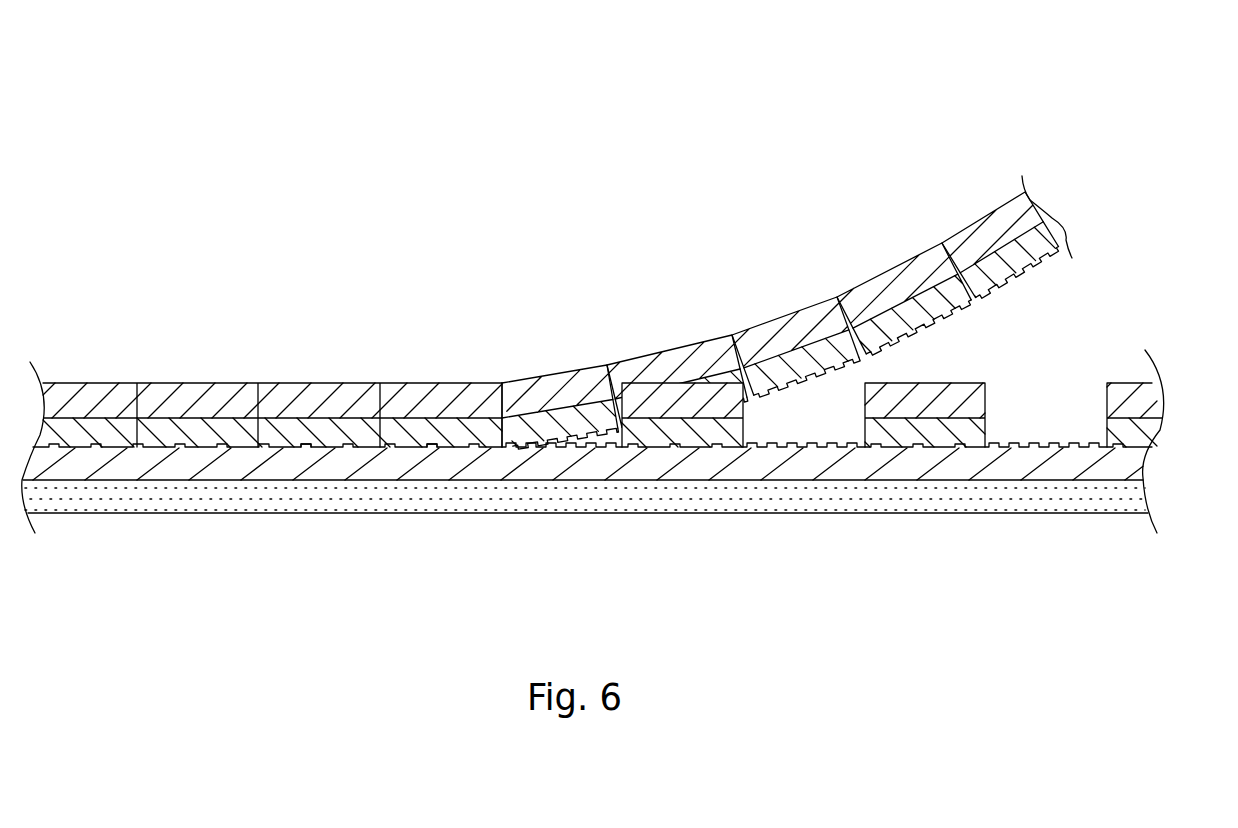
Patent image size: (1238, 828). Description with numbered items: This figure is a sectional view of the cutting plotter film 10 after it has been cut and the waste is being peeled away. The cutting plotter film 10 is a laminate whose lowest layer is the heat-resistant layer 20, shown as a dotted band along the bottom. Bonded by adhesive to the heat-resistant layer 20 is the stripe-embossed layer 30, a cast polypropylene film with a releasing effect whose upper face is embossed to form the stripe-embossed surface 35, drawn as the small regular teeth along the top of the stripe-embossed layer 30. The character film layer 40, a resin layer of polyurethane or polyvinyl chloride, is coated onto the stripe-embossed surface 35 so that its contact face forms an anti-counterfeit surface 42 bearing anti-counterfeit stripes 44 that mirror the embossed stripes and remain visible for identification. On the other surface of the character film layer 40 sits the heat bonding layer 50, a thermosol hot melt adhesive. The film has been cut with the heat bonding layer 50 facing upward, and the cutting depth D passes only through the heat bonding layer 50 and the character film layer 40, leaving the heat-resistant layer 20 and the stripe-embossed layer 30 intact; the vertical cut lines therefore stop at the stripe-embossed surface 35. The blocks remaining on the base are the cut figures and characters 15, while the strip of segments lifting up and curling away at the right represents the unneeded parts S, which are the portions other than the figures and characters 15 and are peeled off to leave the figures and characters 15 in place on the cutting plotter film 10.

The cutting plotter film 10 is at (131, 308).
The figures and characters 15 is at (925, 383).
The heat-resistant layer 20 is at (116, 500).
The stripe-embossed layer 30 is at (202, 468).
The stripe-embossed surface 35 is at (1058, 442).
The character film layer 40 is at (102, 427).
The anti-counterfeit surface 42 is at (432, 440).
The anti-counterfeit stripes 44 is at (288, 447).
The heat bonding layer 50 is at (195, 383).
The cutting depth D is at (347, 382).
The unneeded parts S is at (1030, 177).